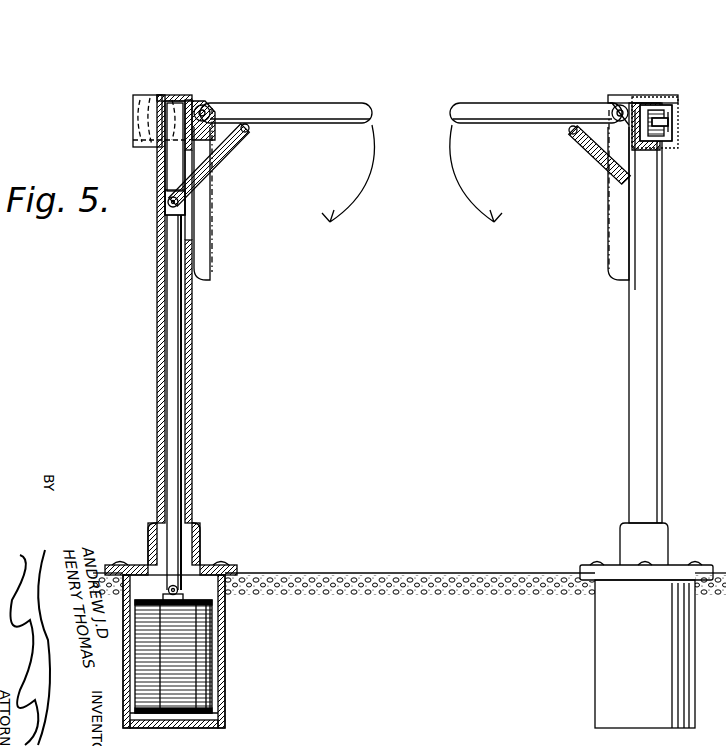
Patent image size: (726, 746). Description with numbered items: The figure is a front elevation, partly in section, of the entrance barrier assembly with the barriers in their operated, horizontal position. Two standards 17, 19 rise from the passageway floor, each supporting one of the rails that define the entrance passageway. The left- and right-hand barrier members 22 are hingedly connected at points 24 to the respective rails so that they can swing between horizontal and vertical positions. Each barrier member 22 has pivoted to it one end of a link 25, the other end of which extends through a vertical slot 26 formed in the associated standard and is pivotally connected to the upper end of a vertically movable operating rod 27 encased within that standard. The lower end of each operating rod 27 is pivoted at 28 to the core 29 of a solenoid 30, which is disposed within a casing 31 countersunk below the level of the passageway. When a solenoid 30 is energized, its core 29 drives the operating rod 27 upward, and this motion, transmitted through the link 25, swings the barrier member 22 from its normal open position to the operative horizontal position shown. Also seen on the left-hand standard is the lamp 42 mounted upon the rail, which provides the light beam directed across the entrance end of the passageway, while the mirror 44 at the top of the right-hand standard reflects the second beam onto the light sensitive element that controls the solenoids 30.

The standard 17 is at (193, 388).
The standard 19 is at (637, 340).
The barrier member 22 is at (328, 104).
The hinge point 24 is at (208, 106).
The link 25 is at (228, 152).
The vertical slot 26 is at (190, 220).
The operating rod 27 is at (172, 313).
The pivot 28 is at (180, 582).
The core 29 is at (195, 608).
The solenoid 30 is at (208, 648).
The casing 31 is at (226, 683).
The lamp 42 is at (133, 100).
The mirror 44 is at (678, 136).